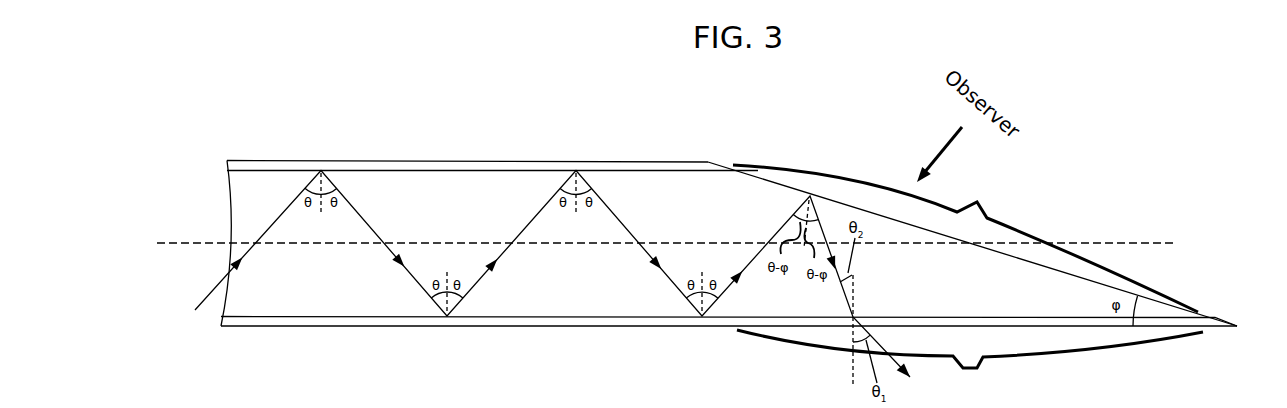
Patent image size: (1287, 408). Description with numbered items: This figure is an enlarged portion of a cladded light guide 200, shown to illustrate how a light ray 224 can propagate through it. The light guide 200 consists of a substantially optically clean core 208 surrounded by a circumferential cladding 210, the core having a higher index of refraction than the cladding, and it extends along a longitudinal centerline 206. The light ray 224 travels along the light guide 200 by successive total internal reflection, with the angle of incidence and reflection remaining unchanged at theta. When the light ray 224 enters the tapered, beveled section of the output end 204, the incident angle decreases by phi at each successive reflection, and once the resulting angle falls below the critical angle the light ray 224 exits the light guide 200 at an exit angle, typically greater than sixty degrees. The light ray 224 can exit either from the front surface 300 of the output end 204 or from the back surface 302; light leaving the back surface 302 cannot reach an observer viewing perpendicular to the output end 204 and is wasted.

The light guide 200 is at (729, 236).
The output end 204 is at (757, 173).
The longitudinal centerline 206 is at (686, 244).
The core 208 is at (367, 295).
The circumferential cladding 210 is at (252, 166).
The light ray 224 is at (552, 288).
The front surface 300 is at (965, 238).
The back surface 302 is at (970, 361).